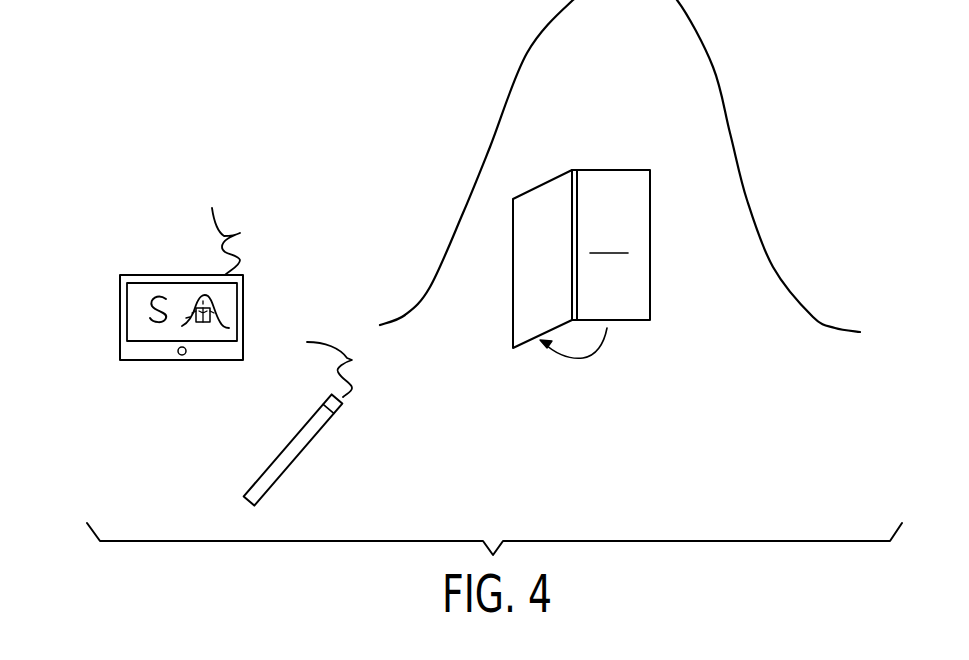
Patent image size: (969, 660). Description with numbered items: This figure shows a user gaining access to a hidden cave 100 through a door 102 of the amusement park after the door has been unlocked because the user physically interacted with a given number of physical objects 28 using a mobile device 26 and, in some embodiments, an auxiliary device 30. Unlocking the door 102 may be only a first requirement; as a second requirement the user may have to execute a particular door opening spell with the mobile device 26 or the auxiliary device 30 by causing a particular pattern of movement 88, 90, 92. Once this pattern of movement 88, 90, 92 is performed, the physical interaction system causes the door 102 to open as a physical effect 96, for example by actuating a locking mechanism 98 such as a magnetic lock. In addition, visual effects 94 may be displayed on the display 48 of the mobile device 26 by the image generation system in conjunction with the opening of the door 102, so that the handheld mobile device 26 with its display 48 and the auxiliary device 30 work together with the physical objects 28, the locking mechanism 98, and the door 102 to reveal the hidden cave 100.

The mobile device 26 is at (140, 250).
The physical objects 28 is at (705, 122).
The auxiliary device 30 is at (332, 443).
The display 48 is at (215, 343).
The pattern of movement 88 is at (157, 322).
The pattern of movement 90 is at (220, 227).
The pattern of movement 92 is at (315, 363).
The visual effects 94 is at (205, 304).
The physical effect 96 is at (585, 358).
The locking mechanism 98 is at (577, 193).
The hidden cave 100 is at (611, 245).
The door 102 is at (539, 279).